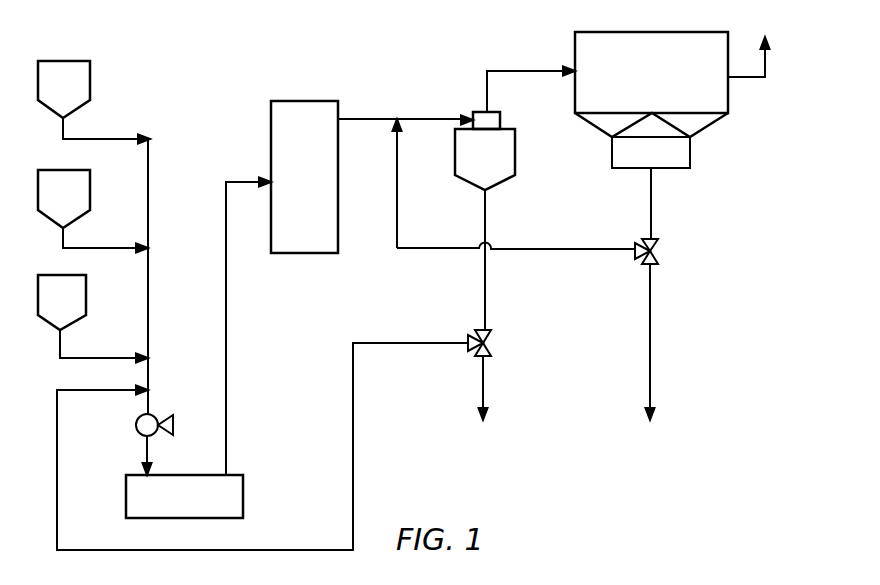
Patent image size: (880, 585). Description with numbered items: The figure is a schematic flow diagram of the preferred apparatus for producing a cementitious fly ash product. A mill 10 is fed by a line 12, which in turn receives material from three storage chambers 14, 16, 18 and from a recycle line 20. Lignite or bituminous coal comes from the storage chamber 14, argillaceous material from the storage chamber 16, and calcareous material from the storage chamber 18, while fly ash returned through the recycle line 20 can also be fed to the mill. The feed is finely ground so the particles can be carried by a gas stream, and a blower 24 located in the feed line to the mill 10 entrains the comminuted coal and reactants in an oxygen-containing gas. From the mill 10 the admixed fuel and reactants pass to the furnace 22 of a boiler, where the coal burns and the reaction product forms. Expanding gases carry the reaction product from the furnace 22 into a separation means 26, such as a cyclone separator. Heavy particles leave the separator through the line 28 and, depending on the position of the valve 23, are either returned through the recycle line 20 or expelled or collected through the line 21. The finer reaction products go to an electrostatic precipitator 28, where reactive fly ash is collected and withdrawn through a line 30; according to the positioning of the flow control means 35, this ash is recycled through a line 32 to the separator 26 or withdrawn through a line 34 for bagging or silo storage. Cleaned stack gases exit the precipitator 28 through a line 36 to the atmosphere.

The mill 10 is at (173, 507).
The line 12 is at (150, 322).
The storage chamber 14 is at (52, 304).
The storage chamber 16 is at (54, 199).
The storage chamber 18 is at (54, 90).
The recycle line 20 is at (353, 432).
The line 21 is at (483, 388).
The furnace 22 is at (293, 197).
The valve 23 is at (491, 344).
The blower 24 is at (136, 422).
The separation means 26 is at (474, 162).
The electrostatic precipitator 28 is at (641, 76).
The line 30 is at (690, 150).
The line 32 is at (565, 251).
The line 34 is at (650, 388).
The flow control means 35 is at (660, 251).
The line 36 is at (765, 80).